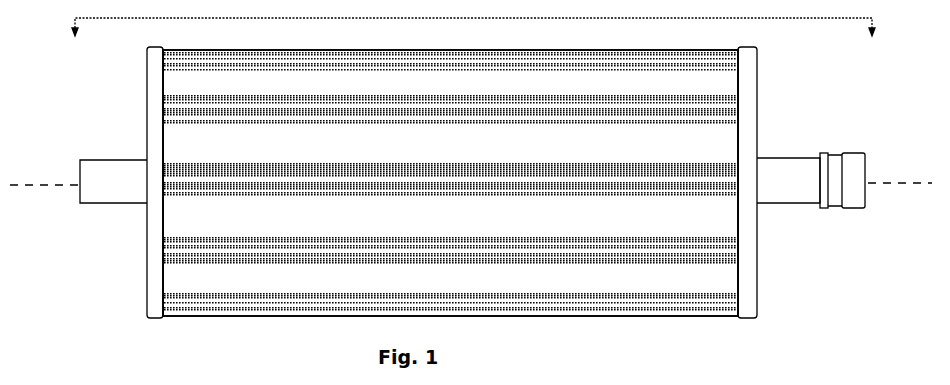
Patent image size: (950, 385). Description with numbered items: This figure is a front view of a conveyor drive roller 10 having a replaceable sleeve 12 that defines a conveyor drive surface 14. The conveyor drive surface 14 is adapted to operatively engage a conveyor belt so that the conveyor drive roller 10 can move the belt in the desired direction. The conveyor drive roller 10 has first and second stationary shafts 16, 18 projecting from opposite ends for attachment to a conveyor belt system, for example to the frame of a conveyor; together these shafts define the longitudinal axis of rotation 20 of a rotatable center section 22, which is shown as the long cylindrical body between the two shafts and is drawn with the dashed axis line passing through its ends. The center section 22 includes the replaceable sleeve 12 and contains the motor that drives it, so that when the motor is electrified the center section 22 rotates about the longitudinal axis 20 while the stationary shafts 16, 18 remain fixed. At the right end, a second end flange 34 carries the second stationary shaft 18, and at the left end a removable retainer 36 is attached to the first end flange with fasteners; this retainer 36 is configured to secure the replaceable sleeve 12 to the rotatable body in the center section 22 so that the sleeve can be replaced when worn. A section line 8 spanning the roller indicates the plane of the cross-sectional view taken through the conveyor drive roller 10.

The section line 8 is at (473, 40).
The conveyor drive roller 10 is at (668, 340).
The replaceable sleeve 12 is at (222, 317).
The conveyor drive surface 14 is at (420, 227).
The first stationary shaft 16 is at (97, 205).
The second stationary shaft 18 is at (793, 202).
The longitudinal axis of rotation 20 is at (55, 186).
The rotatable center section 22 is at (320, 335).
The second end flange 34 is at (745, 120).
The removable retainer 36 is at (150, 248).